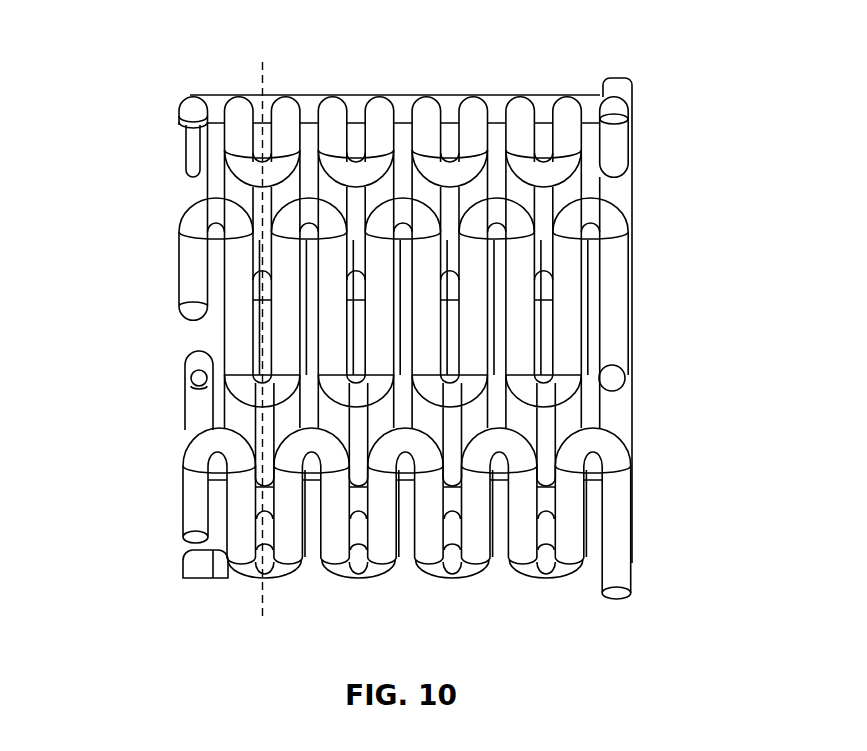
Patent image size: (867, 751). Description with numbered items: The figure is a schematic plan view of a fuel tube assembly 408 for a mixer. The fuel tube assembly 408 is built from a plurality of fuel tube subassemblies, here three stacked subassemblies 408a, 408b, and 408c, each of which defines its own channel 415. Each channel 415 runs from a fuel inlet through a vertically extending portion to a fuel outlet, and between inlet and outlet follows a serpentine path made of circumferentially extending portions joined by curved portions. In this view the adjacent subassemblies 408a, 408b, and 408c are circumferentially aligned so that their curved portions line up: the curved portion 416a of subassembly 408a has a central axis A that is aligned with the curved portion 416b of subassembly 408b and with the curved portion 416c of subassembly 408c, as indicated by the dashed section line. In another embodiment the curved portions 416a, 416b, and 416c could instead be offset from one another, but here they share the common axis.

The fuel tube assembly 408 is at (112, 140).
The fuel tube subassembly 408a is at (648, 121).
The fuel tube subassembly 408b is at (648, 314).
The fuel tube subassembly 408c is at (648, 517).
The channel 415 is at (640, 166).
The curved portion 416a is at (277, 163).
The curved portion 416b is at (240, 384).
The curved portion 416c is at (283, 565).